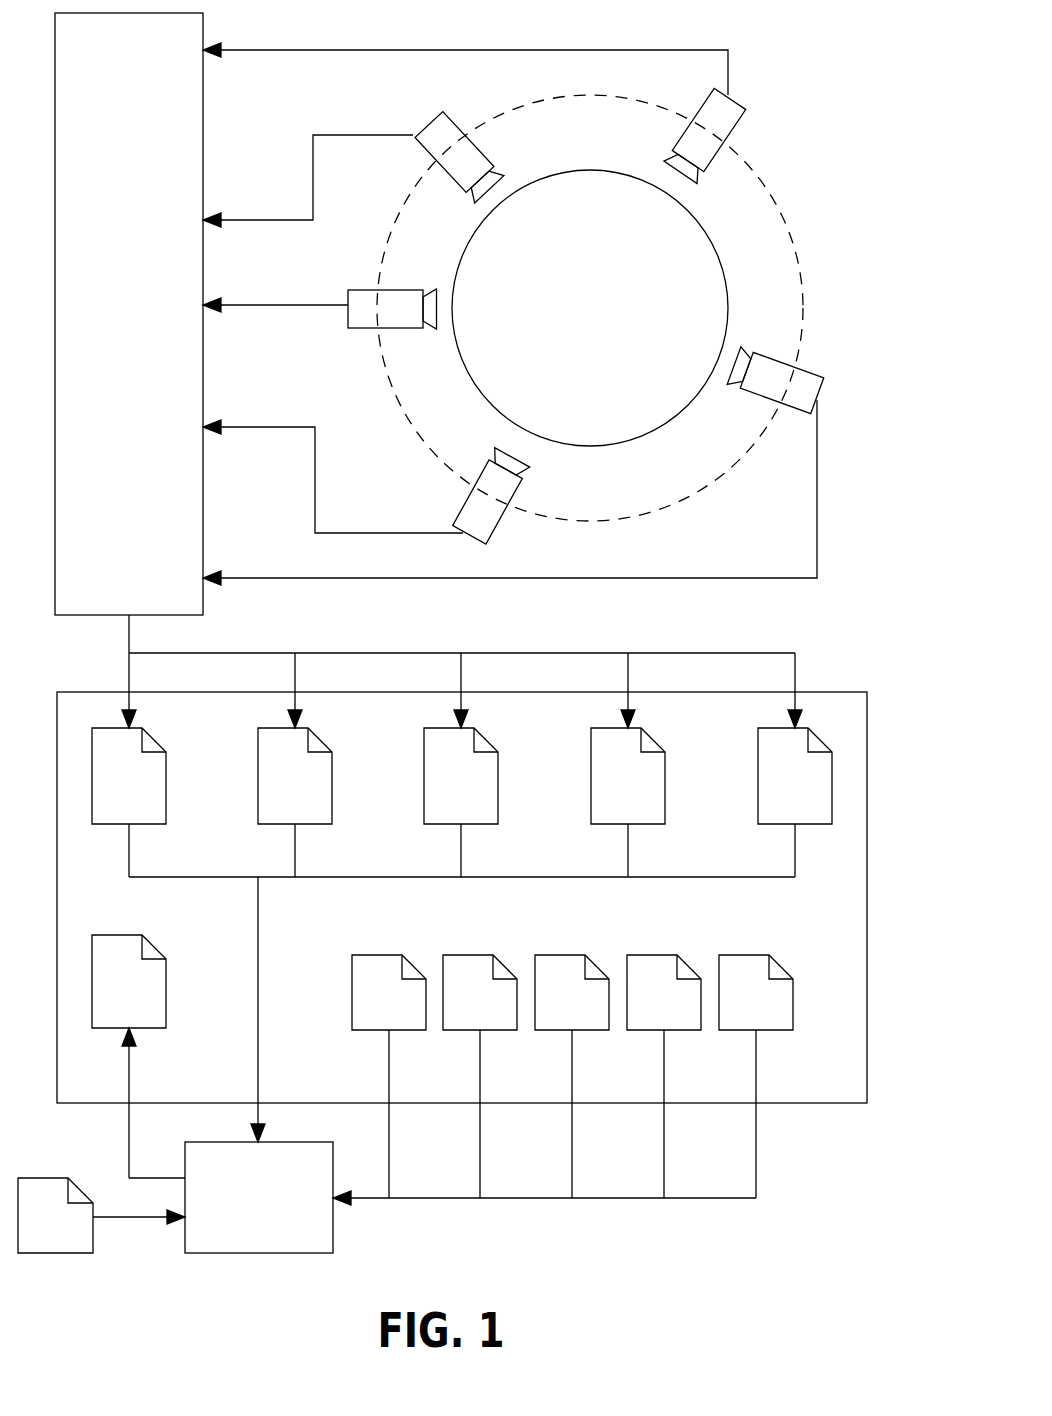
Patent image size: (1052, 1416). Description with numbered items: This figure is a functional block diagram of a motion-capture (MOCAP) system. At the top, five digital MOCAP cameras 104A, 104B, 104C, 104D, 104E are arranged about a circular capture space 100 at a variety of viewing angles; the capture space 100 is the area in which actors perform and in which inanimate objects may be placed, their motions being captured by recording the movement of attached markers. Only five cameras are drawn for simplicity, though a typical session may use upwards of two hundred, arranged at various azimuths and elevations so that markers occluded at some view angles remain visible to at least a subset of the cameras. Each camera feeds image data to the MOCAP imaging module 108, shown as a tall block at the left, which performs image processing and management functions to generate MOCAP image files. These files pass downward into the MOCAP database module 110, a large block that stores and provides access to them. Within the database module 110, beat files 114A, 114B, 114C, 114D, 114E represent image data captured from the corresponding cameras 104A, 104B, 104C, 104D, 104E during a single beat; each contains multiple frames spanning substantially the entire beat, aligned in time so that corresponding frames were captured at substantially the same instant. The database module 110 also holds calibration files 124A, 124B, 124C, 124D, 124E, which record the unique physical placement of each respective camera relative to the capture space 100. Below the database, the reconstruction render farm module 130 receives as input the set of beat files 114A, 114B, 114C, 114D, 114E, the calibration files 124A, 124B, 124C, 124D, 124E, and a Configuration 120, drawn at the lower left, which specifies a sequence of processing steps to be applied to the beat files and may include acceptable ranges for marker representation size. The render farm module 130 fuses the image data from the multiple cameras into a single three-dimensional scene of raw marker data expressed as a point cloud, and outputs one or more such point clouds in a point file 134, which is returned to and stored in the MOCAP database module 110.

The capture space 100 is at (700, 224).
The MOCAP camera 104A is at (348, 328).
The MOCAP camera 104B is at (458, 516).
The MOCAP camera 104C is at (820, 374).
The MOCAP camera 104D is at (741, 112).
The MOCAP camera 104E is at (416, 140).
The MOCAP imaging module 108 is at (108, 141).
The MOCAP database module 110 is at (788, 1087).
The beat file 114A is at (101, 800).
The beat file 114B is at (267, 800).
The beat file 114C is at (433, 800).
The beat file 114D is at (600, 800).
The beat file 114E is at (767, 800).
The Configuration 120 is at (35, 1235).
The calibration file 124A is at (361, 1015).
The calibration file 124B is at (452, 1015).
The calibration file 124C is at (544, 1015).
The calibration file 124D is at (636, 1015).
The calibration file 124E is at (728, 1015).
The reconstruction render farm module 130 is at (239, 1209).
The point file 134 is at (110, 1005).